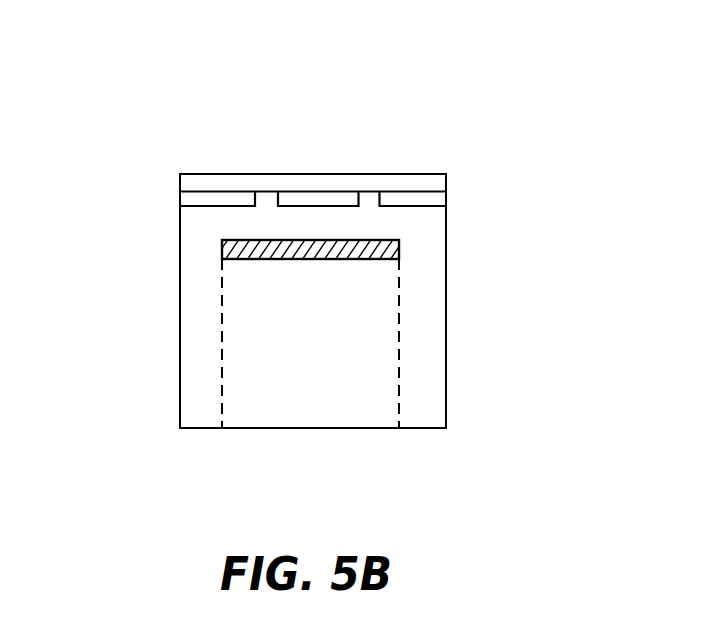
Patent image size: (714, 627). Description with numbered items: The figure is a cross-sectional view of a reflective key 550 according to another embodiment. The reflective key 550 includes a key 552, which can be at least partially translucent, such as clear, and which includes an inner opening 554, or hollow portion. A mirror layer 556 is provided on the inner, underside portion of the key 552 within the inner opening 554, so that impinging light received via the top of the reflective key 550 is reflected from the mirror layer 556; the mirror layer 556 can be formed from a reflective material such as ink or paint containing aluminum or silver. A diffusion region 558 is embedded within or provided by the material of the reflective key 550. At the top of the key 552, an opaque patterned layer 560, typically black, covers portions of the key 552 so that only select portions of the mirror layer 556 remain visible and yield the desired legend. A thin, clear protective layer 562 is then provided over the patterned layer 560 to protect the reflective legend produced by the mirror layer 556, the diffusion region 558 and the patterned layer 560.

The reflective key 550 is at (392, 128).
The key 552 is at (447, 352).
The inner opening 554 is at (222, 389).
The mirror layer 556 is at (318, 259).
The diffusion region 558 is at (459, 205).
The patterned layer 560 is at (180, 197).
The protective layer 562 is at (433, 183).